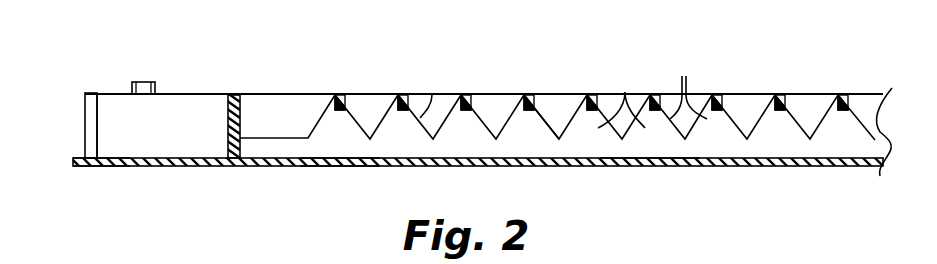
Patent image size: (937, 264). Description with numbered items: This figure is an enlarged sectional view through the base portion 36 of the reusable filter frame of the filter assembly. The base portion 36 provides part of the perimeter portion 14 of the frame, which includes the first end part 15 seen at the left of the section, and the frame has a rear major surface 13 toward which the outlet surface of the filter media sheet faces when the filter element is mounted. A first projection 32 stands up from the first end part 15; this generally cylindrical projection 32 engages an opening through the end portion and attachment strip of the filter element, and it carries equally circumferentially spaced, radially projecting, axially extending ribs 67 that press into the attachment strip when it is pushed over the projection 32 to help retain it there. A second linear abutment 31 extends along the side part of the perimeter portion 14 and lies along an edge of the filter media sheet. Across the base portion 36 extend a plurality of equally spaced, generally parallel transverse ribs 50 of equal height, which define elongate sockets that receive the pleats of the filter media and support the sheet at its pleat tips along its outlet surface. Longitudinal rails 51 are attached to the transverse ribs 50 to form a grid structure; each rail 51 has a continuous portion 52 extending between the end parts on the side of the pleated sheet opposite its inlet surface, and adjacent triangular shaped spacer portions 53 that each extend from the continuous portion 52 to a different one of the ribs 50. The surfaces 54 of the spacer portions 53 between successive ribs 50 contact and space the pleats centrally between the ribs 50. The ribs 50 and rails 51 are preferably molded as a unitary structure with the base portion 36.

The rear major surface 13 is at (198, 167).
The perimeter portion 14 is at (85, 118).
The first end part 15 is at (110, 166).
The second linear abutment 31 is at (557, 108).
The first projection 32 is at (142, 82).
The base portion 36 is at (343, 167).
The transverse ribs 50 is at (337, 95).
The longitudinal rails 51 is at (402, 140).
The continuous portion 52 is at (657, 143).
The spacer portions 53 is at (625, 92).
The surfaces of the spacer portions 54 is at (432, 95).
The ribs 67 is at (132, 90).